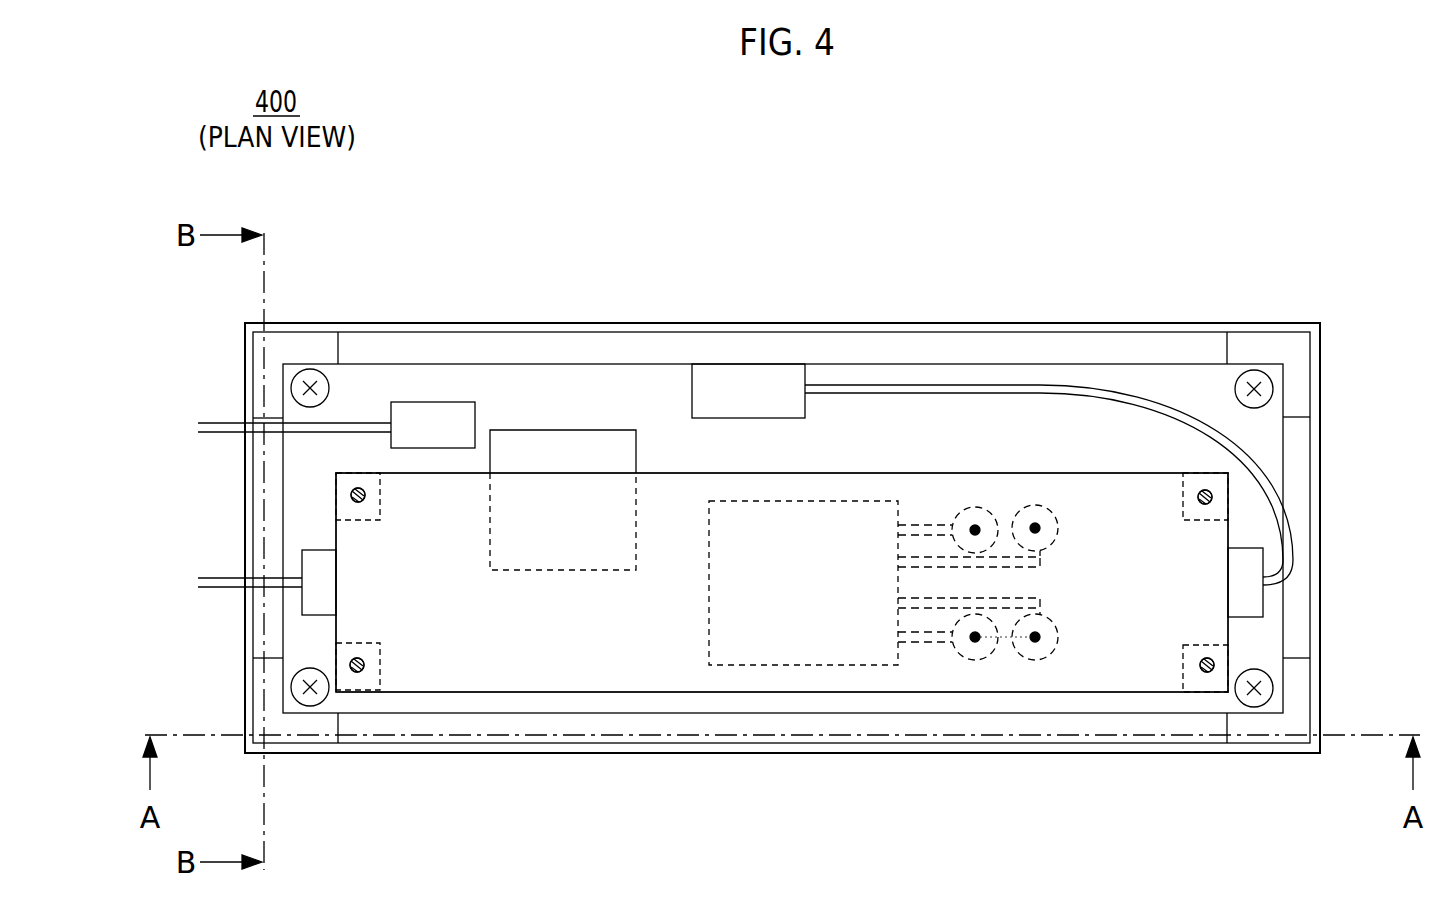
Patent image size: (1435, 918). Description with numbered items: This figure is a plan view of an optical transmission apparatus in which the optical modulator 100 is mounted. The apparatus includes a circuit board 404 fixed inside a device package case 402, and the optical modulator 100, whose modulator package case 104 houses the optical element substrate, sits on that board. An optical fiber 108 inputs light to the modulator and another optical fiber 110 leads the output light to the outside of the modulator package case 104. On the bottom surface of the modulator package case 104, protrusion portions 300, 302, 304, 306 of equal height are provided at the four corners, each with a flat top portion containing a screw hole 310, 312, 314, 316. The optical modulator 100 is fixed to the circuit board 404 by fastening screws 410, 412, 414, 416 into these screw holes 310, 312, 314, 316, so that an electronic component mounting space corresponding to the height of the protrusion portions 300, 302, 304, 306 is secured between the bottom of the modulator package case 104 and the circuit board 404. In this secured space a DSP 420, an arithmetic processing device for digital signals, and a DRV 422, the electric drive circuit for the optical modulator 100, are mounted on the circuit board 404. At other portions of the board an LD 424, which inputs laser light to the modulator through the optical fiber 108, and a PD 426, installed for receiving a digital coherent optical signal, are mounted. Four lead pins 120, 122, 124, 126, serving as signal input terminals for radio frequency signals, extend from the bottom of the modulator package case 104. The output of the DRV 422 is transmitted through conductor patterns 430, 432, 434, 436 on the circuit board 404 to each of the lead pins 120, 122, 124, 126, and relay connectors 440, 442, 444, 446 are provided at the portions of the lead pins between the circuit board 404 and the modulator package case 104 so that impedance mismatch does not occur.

The device package case 402 is at (315, 323).
The circuit board 404 is at (371, 332).
The optical modulator 100 is at (632, 655).
The modulator package case 104 is at (782, 688).
The optical fiber 108 is at (1290, 577).
The optical fiber 110 is at (212, 578).
The lead pin 120 is at (976, 525).
The lead pin 122 is at (1036, 523).
The lead pin 124 is at (976, 648).
The lead pin 126 is at (1036, 648).
The protrusion portion 300 is at (350, 663).
The protrusion portion 302 is at (1217, 652).
The protrusion portion 304 is at (336, 521).
The protrusion portion 306 is at (1222, 510).
The screw hole 310 is at (357, 675).
The screw hole 312 is at (1209, 675).
The screw hole 314 is at (350, 494).
The screw hole 316 is at (1215, 495).
The screw 410 is at (384, 660).
The screw 412 is at (1201, 664).
The screw 414 is at (363, 500).
The screw 416 is at (1203, 503).
The DSP 420 is at (550, 435).
The DRV 422 is at (790, 640).
The LD 424 is at (750, 387).
The PD 426 is at (430, 415).
The conductor pattern 430 is at (918, 525).
The conductor pattern 432 is at (937, 557).
The conductor pattern 434 is at (905, 642).
The conductor pattern 436 is at (932, 608).
The relay connector 440 is at (963, 508).
The relay connector 442 is at (1053, 512).
The relay connector 444 is at (960, 660).
The relay connector 446 is at (1057, 660).